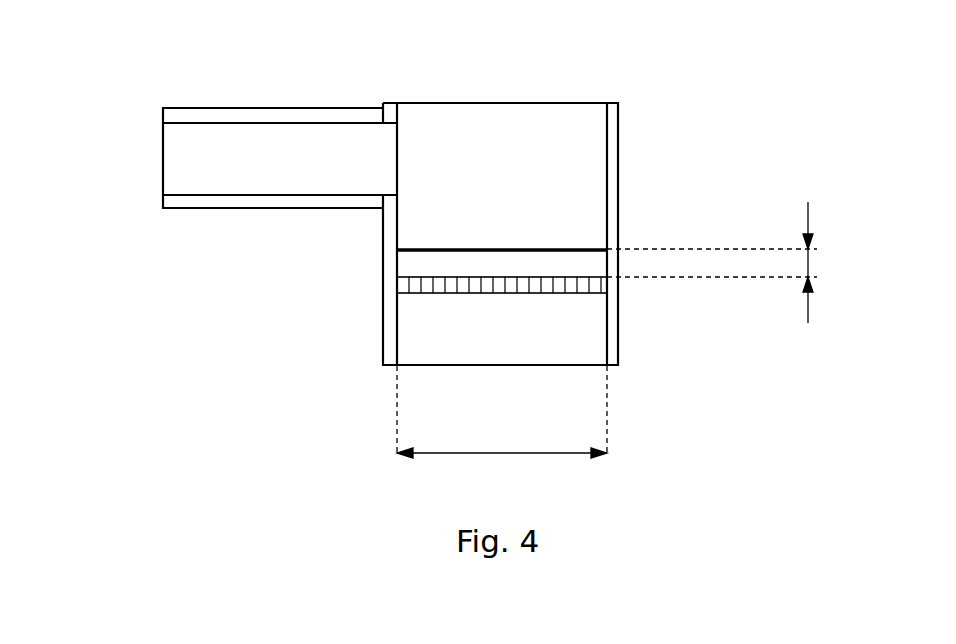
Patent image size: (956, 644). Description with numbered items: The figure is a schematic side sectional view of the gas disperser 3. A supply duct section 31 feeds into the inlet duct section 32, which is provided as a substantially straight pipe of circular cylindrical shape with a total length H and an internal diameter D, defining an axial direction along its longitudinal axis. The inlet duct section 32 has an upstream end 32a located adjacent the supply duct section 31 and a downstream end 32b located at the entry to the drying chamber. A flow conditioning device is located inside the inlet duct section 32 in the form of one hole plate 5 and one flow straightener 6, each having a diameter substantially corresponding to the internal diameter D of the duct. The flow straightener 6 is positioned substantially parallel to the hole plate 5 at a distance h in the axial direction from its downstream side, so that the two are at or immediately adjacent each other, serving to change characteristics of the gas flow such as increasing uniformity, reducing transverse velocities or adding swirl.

The gas disperser 3 is at (672, 77).
The supply duct section 31 is at (262, 116).
The inlet duct section 32 is at (383, 276).
The upstream end 32a is at (572, 158).
The downstream end 32b is at (590, 351).
The hole plate 5 is at (592, 250).
The flow straightener 6 is at (588, 285).